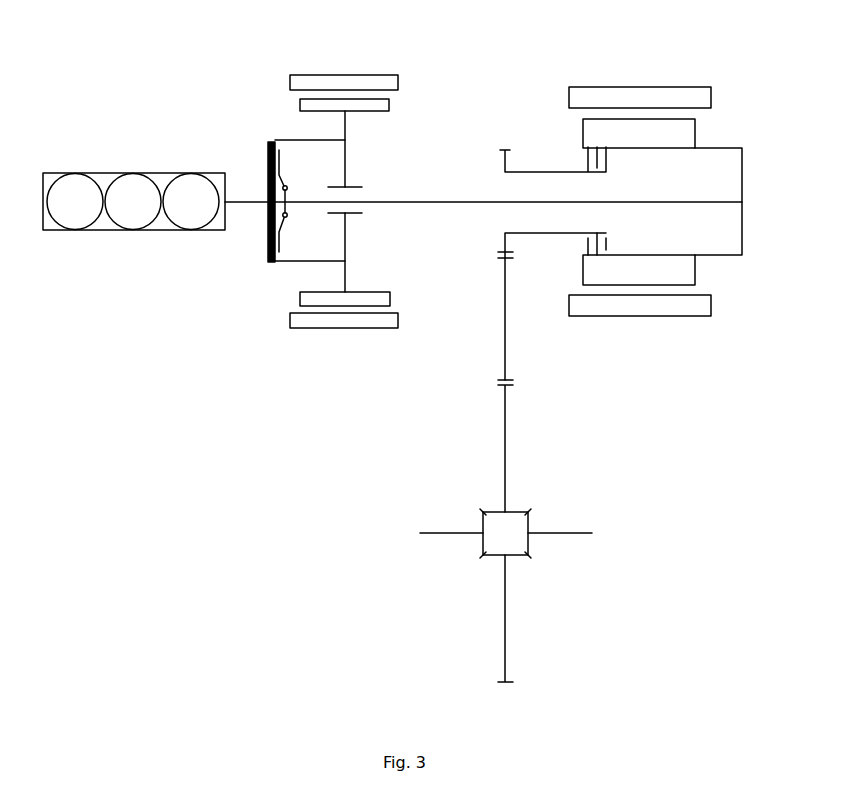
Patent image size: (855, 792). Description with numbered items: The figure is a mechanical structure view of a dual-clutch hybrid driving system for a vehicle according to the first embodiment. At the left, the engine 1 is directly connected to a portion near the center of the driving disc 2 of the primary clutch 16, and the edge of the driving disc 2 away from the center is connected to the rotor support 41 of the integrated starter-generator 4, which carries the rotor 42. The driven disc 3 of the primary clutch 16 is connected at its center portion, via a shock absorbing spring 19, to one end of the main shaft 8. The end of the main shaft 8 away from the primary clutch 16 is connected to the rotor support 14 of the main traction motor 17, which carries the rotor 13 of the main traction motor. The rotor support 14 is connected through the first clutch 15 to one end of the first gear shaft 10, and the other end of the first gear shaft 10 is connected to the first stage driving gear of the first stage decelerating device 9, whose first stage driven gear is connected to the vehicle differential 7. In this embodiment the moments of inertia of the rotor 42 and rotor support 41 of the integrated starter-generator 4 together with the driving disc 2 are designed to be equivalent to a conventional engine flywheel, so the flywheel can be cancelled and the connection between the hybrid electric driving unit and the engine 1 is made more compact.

The engine 1 is at (135, 230).
The driving disc of primary clutch 2 is at (266, 232).
The driven disc of primary clutch 3 is at (282, 242).
The integrated starter-generator 4 is at (344, 74).
The differential 7 is at (482, 537).
The main shaft 8 is at (382, 201).
The first stage decelerating device 9 is at (508, 683).
The first gear shaft 10 is at (522, 233).
The rotor of main traction motor 13 is at (695, 134).
The rotor support of main traction motor 14 is at (746, 147).
The first clutch 15 is at (607, 238).
The primary clutch 16 is at (305, 139).
The main traction motor 17 is at (638, 86).
The shock absorbing spring 19 is at (288, 186).
The rotor support of integrated starter-generator 41 is at (345, 153).
The rotor of integrated starter-generator 42 is at (300, 295).